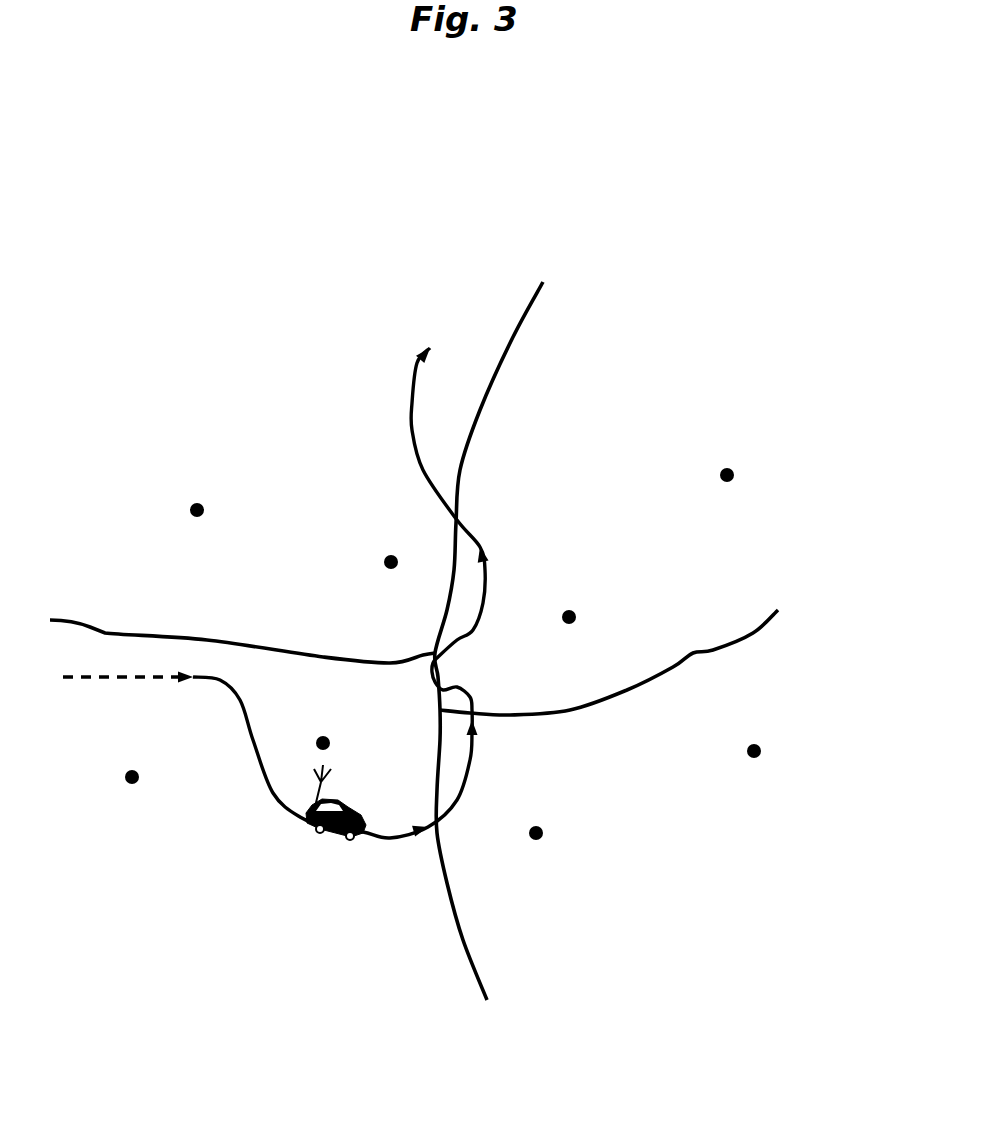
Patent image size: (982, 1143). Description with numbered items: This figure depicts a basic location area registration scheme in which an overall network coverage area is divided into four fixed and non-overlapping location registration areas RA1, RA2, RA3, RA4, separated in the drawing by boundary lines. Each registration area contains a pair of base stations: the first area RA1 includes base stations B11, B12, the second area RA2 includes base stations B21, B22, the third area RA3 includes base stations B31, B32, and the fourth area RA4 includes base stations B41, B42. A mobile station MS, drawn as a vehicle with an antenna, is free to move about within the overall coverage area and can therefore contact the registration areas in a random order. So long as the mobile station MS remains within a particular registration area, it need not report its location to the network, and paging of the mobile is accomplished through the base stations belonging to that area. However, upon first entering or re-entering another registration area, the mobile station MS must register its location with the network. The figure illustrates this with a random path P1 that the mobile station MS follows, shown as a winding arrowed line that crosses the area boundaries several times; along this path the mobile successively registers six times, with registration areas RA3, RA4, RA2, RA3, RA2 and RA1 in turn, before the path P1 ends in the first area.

The base station B11 is at (388, 543).
The base station B12 is at (195, 490).
The base station B21 is at (563, 598).
The base station B22 is at (726, 454).
The base station B31 is at (321, 724).
The base station B32 is at (131, 758).
The base station B41 is at (539, 815).
The base station B42 is at (764, 730).
The mobile station MS is at (348, 808).
The random path P1 is at (427, 340).
The location registration area RA1 is at (129, 286).
The location registration area RA2 is at (833, 299).
The location registration area RA3 is at (99, 912).
The location registration area RA4 is at (816, 932).